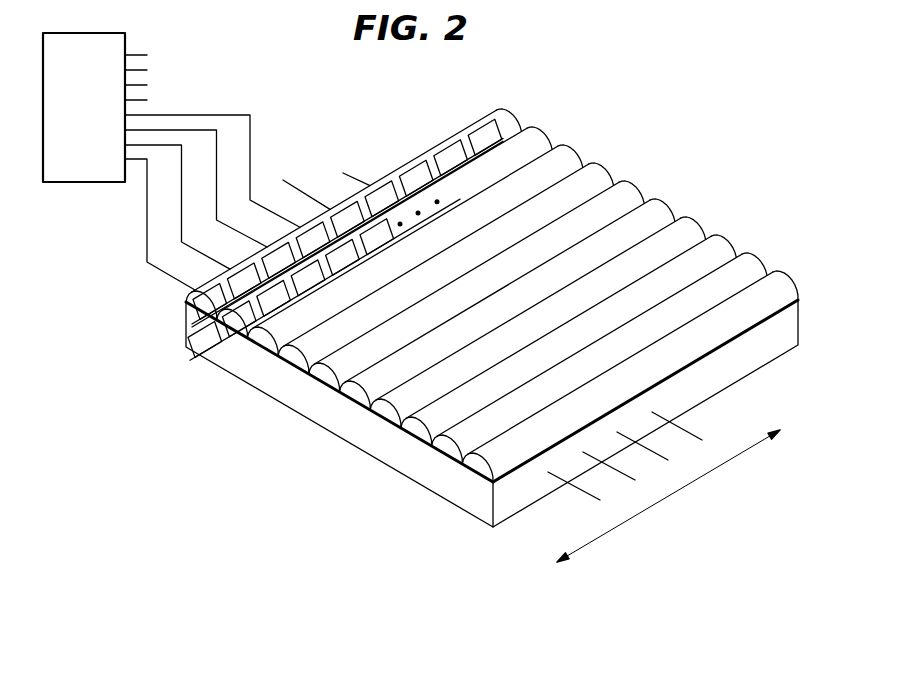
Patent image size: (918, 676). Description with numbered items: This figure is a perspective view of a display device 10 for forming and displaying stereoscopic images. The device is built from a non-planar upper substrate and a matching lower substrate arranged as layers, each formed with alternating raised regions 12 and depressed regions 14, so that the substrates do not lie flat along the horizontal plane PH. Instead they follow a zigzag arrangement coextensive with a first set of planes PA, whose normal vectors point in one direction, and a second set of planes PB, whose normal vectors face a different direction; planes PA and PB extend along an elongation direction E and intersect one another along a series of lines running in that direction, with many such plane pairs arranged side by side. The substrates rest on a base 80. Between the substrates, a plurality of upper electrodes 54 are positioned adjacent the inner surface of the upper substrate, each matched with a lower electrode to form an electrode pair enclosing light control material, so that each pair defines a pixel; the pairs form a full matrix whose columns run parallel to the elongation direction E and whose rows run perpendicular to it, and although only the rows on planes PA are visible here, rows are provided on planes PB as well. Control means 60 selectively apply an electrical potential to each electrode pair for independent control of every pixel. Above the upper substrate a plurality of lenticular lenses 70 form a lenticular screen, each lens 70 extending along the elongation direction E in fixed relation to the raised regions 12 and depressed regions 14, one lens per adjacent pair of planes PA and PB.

The display device 10 is at (470, 341).
The raised regions 12 is at (414, 445).
The depressed regions 14 is at (387, 437).
The upper electrodes 54 is at (447, 158).
The control means 60 is at (86, 182).
The lenticular lenses 70 is at (748, 265).
The base 80 is at (463, 497).
The horizontal plane PH is at (203, 330).
The first set of planes PA is at (205, 350).
The second set of planes PB is at (264, 362).
The elongation direction E is at (664, 487).